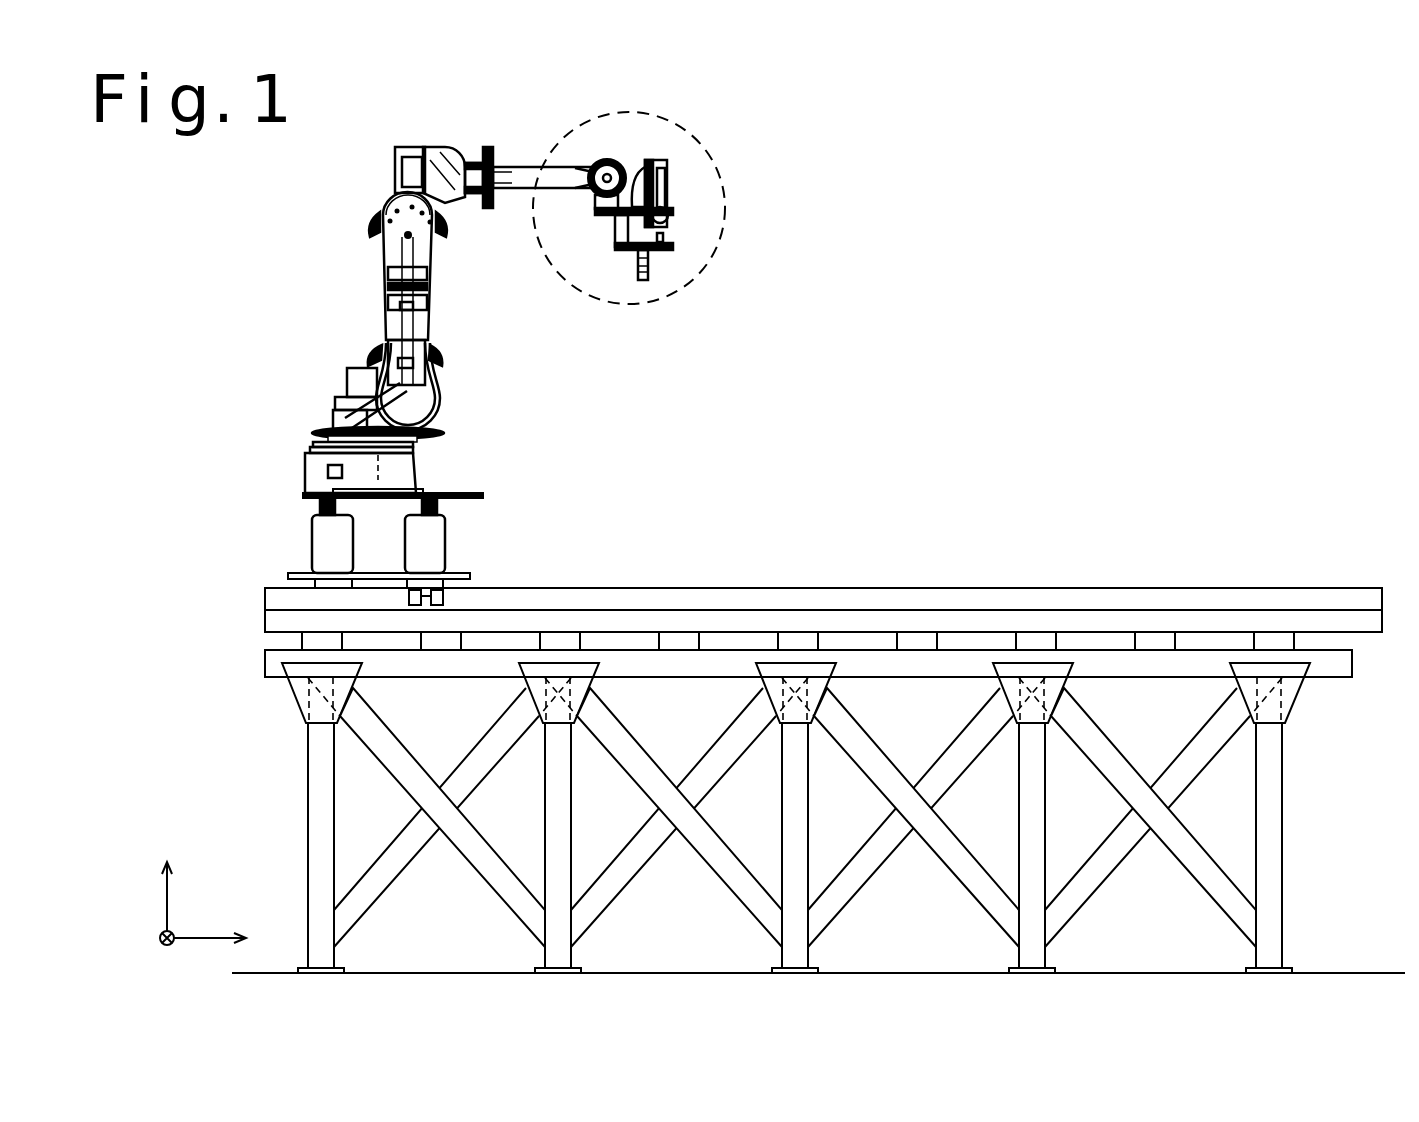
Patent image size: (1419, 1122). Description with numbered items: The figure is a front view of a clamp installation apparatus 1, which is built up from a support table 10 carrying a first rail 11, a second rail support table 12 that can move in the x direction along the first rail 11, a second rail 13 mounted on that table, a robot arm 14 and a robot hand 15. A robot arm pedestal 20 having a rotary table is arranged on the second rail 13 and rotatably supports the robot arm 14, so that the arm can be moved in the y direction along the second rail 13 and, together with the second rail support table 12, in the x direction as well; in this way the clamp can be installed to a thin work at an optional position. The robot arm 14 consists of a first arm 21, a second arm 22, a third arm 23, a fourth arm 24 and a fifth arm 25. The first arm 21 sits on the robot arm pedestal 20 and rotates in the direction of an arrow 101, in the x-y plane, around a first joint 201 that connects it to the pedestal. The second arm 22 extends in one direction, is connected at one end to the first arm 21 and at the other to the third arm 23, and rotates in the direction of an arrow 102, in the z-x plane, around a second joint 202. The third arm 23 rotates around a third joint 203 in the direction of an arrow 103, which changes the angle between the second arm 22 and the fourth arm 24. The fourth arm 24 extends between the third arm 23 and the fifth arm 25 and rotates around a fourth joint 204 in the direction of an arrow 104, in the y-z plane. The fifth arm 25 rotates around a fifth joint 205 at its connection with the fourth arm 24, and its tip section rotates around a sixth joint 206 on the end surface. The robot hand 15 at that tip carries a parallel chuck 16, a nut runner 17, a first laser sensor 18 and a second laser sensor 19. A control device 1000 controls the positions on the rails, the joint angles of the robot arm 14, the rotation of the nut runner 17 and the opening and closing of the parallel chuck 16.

The clamp installation apparatus 1 is at (1058, 290).
The support table 10 is at (1283, 838).
The first rail 11 is at (1382, 602).
The second rail support table 12 is at (470, 577).
The second rail 13 is at (437, 542).
The robot arm 14 is at (300, 290).
The robot hand 15 is at (598, 262).
The parallel chuck 16 is at (642, 280).
The nut runner 17 is at (660, 187).
The first laser sensor 18 is at (663, 253).
The second laser sensor 19 is at (670, 250).
The robot arm pedestal 20 is at (318, 472).
The first arm 21 is at (347, 390).
The second arm 22 is at (423, 322).
The third arm 23 is at (432, 210).
The fourth arm 24 is at (528, 178).
The fifth arm 25 is at (593, 193).
The arrow 101 is at (448, 432).
The arrow 102 is at (445, 350).
The arrow 103 is at (377, 210).
The arrow 104 is at (470, 150).
The first joint 201 is at (380, 466).
The second joint 202 is at (438, 400).
The third joint 203 is at (390, 193).
The fourth joint 204 is at (508, 168).
The fifth joint 205 is at (615, 163).
The sixth joint 206 is at (613, 197).
The control device 1000 is at (305, 480).